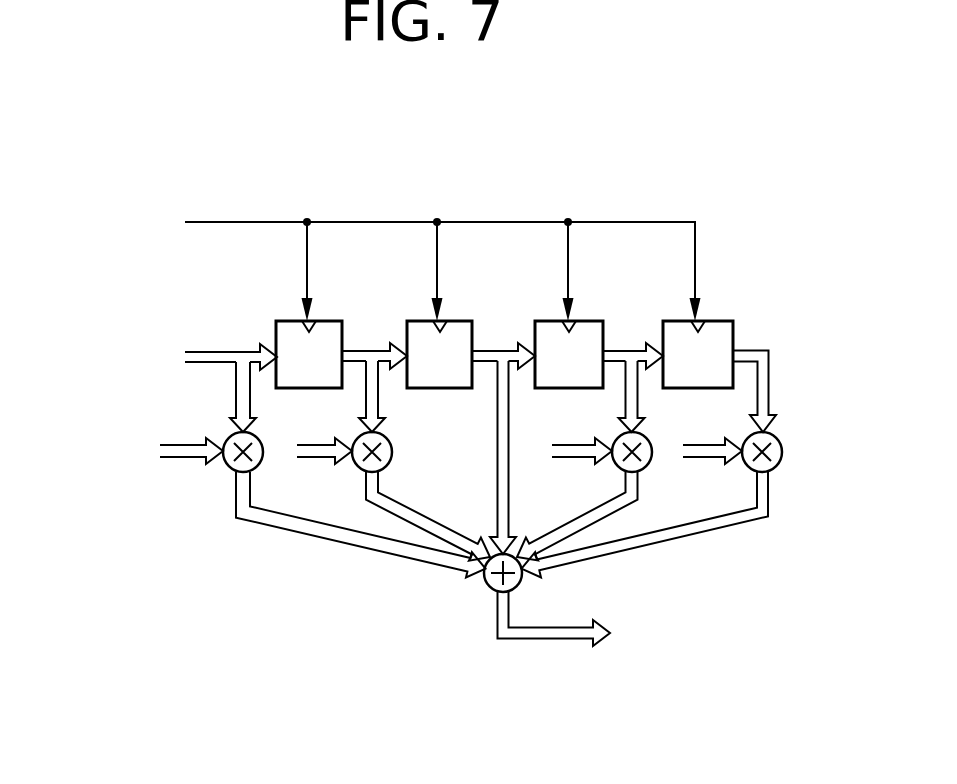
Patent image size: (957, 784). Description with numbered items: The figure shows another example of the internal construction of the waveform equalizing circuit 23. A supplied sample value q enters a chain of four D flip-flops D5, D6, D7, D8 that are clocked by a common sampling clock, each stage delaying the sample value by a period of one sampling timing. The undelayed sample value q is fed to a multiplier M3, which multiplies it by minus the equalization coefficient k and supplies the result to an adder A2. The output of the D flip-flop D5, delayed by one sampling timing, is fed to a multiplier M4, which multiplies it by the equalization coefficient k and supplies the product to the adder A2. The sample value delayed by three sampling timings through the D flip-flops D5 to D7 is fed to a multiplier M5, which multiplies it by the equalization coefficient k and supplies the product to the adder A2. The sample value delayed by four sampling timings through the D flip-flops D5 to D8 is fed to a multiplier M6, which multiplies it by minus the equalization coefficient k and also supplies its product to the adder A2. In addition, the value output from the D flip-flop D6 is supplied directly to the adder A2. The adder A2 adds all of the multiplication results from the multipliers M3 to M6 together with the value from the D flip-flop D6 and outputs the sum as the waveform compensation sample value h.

The waveform equalizing circuit 23 is at (498, 157).
The D flip-flop D5 is at (333, 320).
The D flip-flop D6 is at (464, 320).
The D flip-flop D7 is at (596, 320).
The D flip-flop D8 is at (724, 320).
The multiplier M3 is at (258, 466).
The multiplier M4 is at (387, 466).
The multiplier M5 is at (647, 466).
The multiplier M6 is at (777, 466).
The adder A2 is at (491, 589).